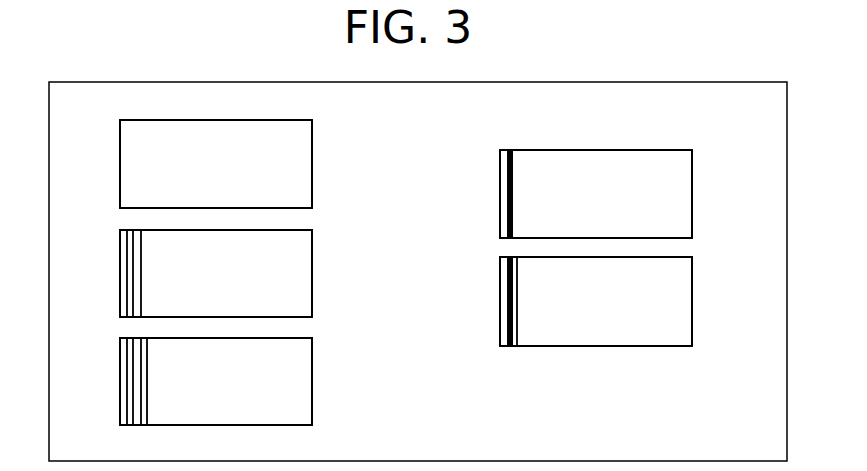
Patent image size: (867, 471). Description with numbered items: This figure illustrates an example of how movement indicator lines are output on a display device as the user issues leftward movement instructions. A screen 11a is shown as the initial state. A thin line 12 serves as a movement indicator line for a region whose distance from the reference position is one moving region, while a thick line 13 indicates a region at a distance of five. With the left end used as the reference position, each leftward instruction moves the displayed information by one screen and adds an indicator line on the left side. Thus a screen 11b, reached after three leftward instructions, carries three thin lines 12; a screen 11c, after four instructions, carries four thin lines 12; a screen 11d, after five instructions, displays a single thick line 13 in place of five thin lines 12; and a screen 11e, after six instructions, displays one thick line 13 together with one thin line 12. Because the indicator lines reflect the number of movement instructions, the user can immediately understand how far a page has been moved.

The screen 11a is at (313, 150).
The screen 11b is at (313, 258).
The screen 11c is at (313, 366).
The screen 11d is at (693, 177).
The screen 11e is at (693, 285).
The thin line 12 is at (127, 230).
The thick line 13 is at (510, 150).